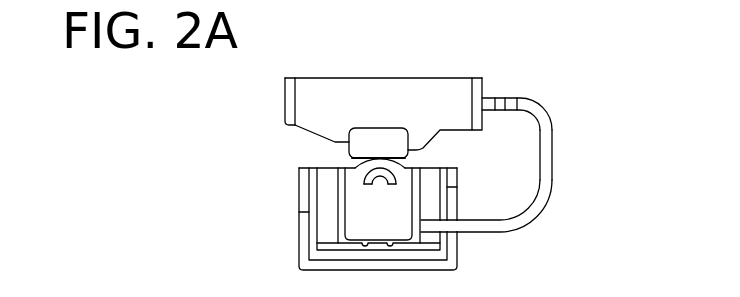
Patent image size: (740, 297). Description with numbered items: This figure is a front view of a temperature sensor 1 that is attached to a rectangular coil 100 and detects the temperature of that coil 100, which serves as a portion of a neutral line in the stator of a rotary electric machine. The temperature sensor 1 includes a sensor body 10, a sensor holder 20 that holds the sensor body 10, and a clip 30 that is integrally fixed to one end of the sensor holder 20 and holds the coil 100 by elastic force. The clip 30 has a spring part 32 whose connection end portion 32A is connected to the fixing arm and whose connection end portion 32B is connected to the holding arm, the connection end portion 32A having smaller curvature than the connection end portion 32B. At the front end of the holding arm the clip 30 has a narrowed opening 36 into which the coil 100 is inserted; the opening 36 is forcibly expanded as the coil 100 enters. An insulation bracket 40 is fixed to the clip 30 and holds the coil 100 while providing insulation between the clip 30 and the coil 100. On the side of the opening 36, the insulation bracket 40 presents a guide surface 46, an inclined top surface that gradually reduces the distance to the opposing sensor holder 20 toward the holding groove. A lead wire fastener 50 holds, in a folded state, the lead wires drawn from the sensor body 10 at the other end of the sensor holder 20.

The temperature sensor 1 is at (565, 106).
The sensor body 10 is at (412, 170).
The sensor holder 20 is at (299, 207).
The clip 30 is at (553, 158).
The spring part 32 is at (552, 182).
The connection end portion 32A is at (541, 208).
The connection end portion 32B is at (542, 98).
The opening 36 is at (308, 158).
The insulation bracket 40 is at (286, 107).
The guide surface 46 is at (298, 132).
The lead wire fastener 50 is at (458, 247).
The coil 100 is at (348, 150).